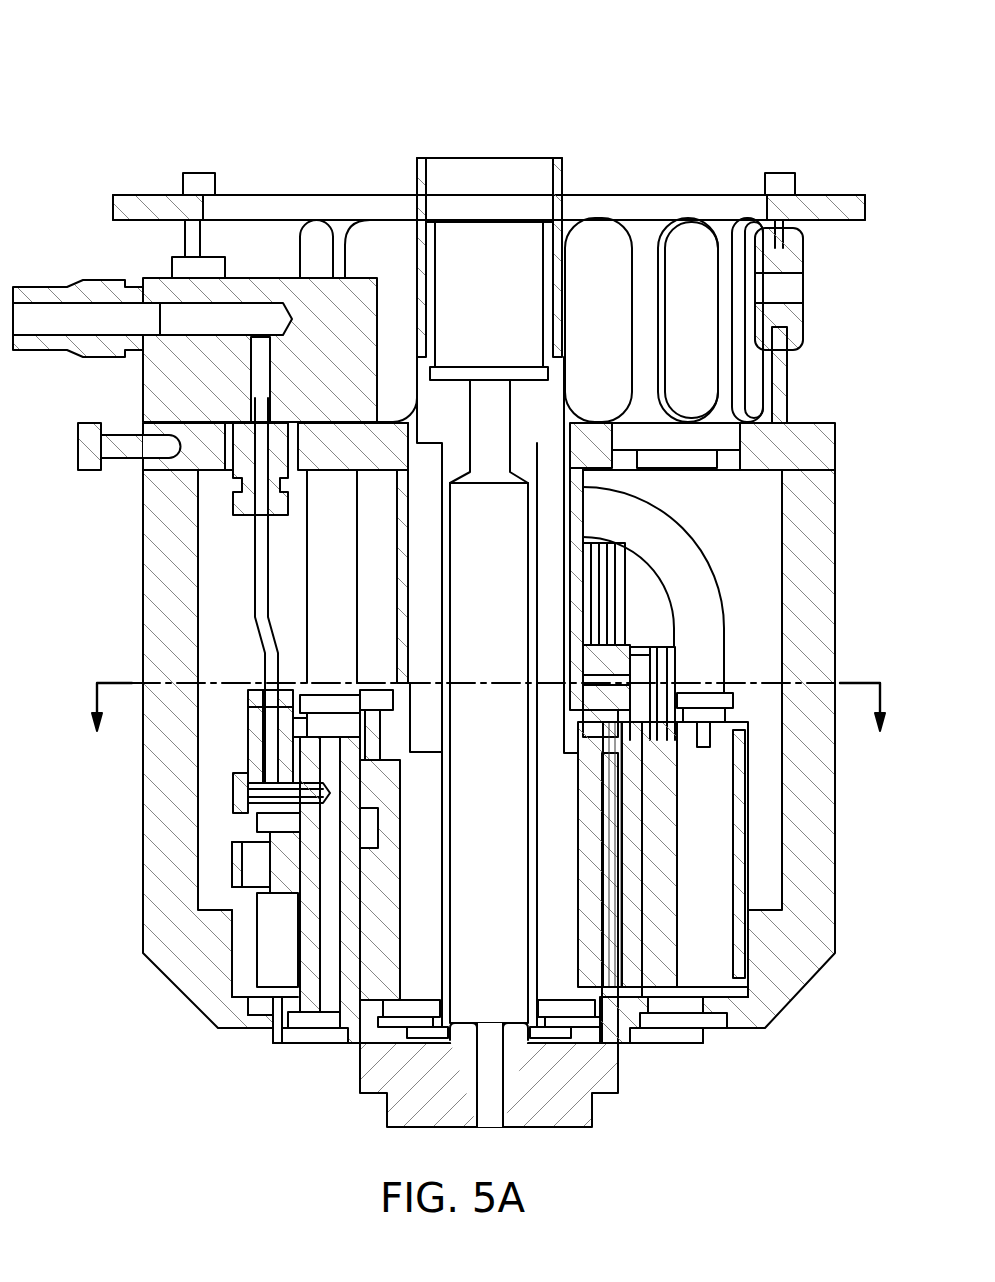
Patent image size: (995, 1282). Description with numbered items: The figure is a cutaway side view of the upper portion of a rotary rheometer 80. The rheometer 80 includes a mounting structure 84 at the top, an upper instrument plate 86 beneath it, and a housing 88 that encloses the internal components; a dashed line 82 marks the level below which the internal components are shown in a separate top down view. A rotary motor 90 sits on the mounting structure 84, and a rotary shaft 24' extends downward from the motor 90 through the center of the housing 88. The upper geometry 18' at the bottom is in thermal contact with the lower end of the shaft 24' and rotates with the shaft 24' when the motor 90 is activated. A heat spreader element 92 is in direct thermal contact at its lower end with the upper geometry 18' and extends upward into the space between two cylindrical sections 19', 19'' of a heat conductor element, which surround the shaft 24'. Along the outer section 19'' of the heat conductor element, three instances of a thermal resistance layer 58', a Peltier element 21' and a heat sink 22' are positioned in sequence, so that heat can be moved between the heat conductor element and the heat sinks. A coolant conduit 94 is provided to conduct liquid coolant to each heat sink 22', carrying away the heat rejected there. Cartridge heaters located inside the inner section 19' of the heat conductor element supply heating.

The rotary rheometer 80 is at (176, 96).
The dashed line 82 is at (840, 683).
The mounting structure 84 is at (642, 205).
The upper instrument plate 86 is at (830, 438).
The housing 88 is at (812, 562).
The rotary motor 90 is at (483, 237).
The coolant conduit 94 is at (312, 563).
The Peltier element 21' is at (686, 854).
The thermal resistance layer 58' is at (676, 854).
The heat spreader element 92 is at (613, 883).
The inner cylindrical section of heat conductor element 19' is at (654, 854).
The outer cylindrical section of heat conductor element 19'' is at (677, 1036).
The heat sink 22' is at (785, 859).
The upper geometry 18' is at (504, 1087).
The rotary shaft 24' is at (500, 1089).